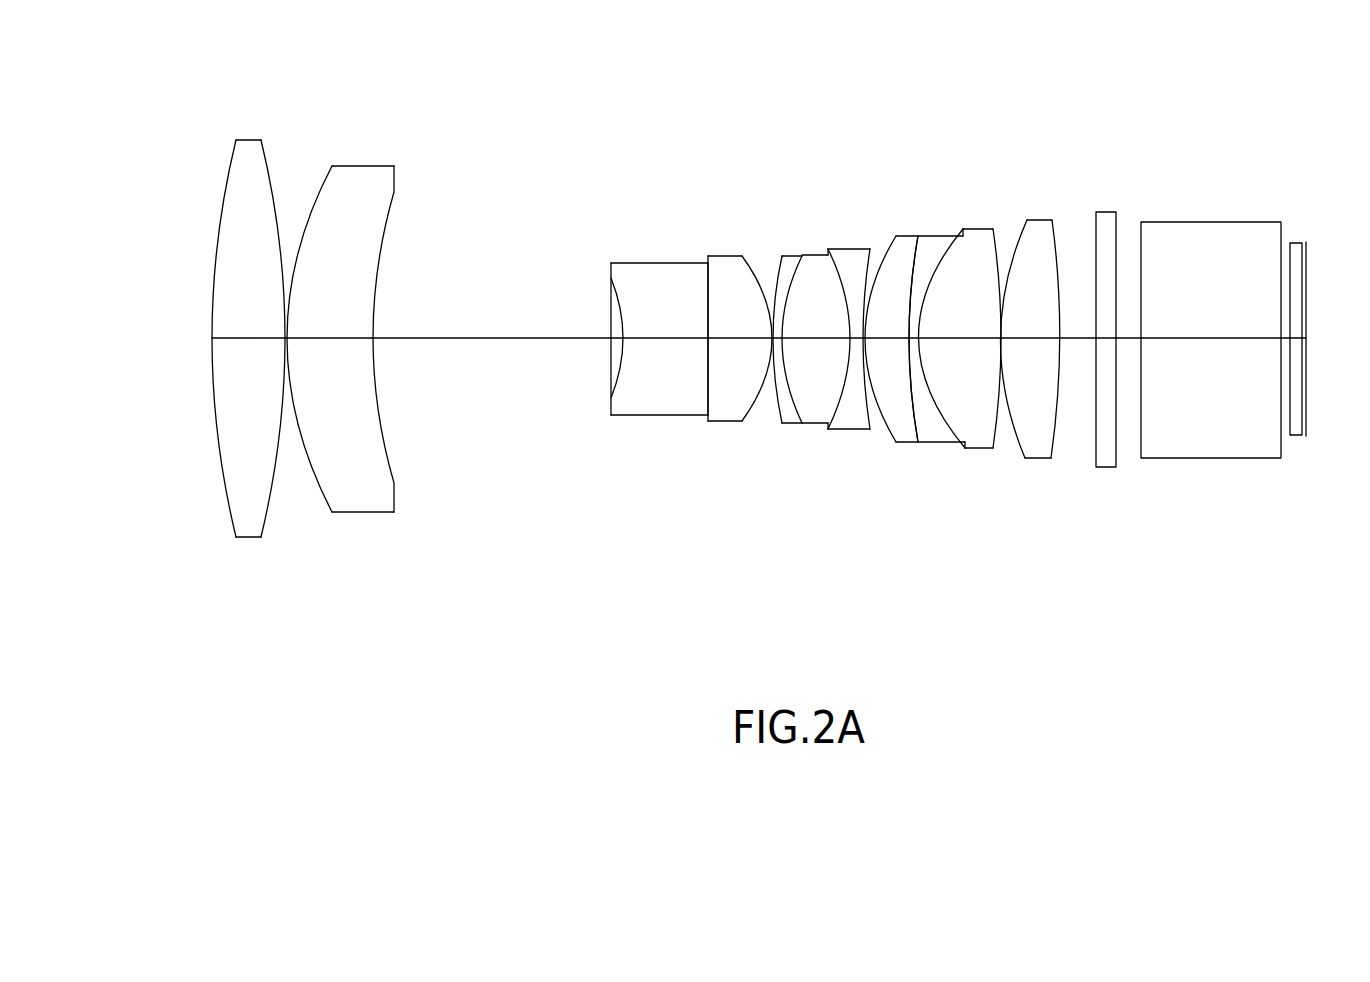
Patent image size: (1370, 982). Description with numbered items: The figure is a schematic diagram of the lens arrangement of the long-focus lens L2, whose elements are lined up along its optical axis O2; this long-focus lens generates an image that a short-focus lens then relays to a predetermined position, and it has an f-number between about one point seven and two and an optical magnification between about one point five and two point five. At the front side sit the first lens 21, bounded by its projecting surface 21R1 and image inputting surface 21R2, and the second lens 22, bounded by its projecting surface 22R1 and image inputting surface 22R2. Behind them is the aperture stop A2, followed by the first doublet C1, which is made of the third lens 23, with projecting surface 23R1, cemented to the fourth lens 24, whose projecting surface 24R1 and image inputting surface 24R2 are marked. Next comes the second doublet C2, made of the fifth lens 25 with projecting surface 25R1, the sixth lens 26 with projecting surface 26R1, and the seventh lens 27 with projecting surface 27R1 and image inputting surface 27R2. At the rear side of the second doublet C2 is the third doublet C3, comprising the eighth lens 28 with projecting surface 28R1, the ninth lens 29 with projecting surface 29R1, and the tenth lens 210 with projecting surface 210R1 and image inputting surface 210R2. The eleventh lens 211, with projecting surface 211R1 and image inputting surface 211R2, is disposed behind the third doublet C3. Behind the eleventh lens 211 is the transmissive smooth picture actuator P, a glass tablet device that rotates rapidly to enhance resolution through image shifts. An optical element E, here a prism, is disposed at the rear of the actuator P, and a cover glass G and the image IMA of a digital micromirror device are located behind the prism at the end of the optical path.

The long-focus lens L2 is at (1341, 78).
The optical axis O2 is at (457, 338).
The aperture stop A2 is at (608, 303).
The first doublet C1 is at (746, 147).
The second doublet C2 is at (880, 147).
The third doublet C3 is at (1030, 147).
The first lens 21 is at (248, 148).
The second lens 22 is at (360, 183).
The third lens 23 is at (637, 273).
The fourth lens 24 is at (727, 273).
The fifth lens 25 is at (790, 265).
The sixth lens 26 is at (817, 265).
The seventh lens 27 is at (852, 263).
The eighth lens 28 is at (903, 243).
The ninth lens 29 is at (937, 243).
The tenth lens 210 is at (980, 233).
The eleventh lens 211 is at (1040, 227).
The transmissive smooth picture actuator P is at (1103, 220).
The optical element E is at (1208, 230).
The cover glass G is at (1298, 250).
The image IMA is at (1307, 267).
The projecting surface of the first lens 21R1 is at (222, 467).
The image inputting surface of the first lens 21R2 is at (268, 507).
The projecting surface of the second lens 22R1 is at (308, 472).
The image inputting surface of the second lens 22R2 is at (390, 455).
The projecting surface of the third lens 23R1 is at (620, 370).
The projecting surface of the fourth lens 24R1 is at (710, 370).
The image inputting surface of the fourth lens 24R2 is at (753, 407).
The projecting surface of the fifth lens 25R1 is at (773, 407).
The projecting surface of the sixth lens 26R1 is at (795, 407).
The projecting surface of the seventh lens 27R1 is at (833, 404).
The image inputting surface of the seventh lens 27R2 is at (871, 427).
The projecting surface of the eighth lens 28R1 is at (880, 428).
The projecting surface of the ninth lens 29R1 is at (915, 430).
The projecting surface of the tenth lens 210R1 is at (950, 440).
The image inputting surface of the tenth lens 210R2 is at (1000, 428).
The projecting surface of the eleventh lens 211R1 is at (1025, 450).
The image inputting surface of the eleventh lens 211R2 is at (1055, 437).